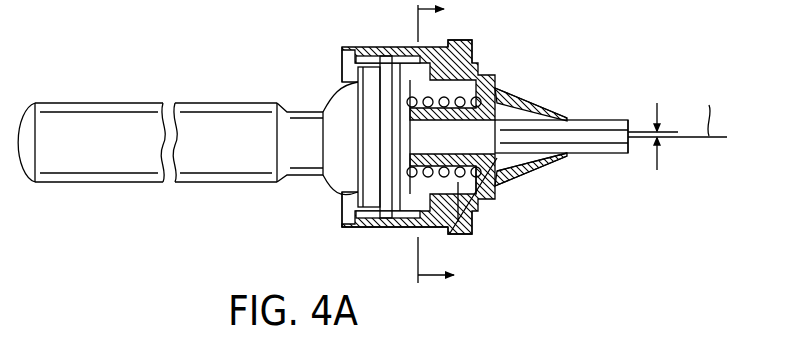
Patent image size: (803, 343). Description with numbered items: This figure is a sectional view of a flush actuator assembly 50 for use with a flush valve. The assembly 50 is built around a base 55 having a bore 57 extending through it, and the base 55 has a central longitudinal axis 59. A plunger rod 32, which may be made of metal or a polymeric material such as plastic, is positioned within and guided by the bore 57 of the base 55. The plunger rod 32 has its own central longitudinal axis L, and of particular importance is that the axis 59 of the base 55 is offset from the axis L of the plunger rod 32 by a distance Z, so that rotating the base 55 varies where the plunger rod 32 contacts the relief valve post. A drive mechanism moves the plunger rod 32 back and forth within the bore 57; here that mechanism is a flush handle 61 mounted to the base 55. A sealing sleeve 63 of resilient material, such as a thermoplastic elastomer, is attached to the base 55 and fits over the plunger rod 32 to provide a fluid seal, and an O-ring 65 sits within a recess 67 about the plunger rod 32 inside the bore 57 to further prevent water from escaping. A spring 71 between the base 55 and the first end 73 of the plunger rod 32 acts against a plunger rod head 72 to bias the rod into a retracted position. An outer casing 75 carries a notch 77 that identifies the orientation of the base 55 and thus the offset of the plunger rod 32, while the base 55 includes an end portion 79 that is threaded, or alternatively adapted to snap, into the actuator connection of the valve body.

The flush actuator assembly 50 is at (201, 44).
The flush handle 61 is at (72, 106).
The notch 77 is at (342, 62).
The plunger rod head 72 is at (393, 64).
The first end of the plunger rod 73 is at (405, 152).
The base 55 is at (478, 60).
The bore 57 is at (503, 90).
The plunger rod 32 is at (588, 120).
The central longitudinal axis of the base 59 is at (643, 128).
The O-ring 65 is at (483, 184).
The sealing sleeve 63 is at (544, 172).
The end portion 79 is at (470, 215).
The recess 67 is at (462, 233).
The spring 71 is at (368, 230).
The outer casing 75 is at (342, 230).